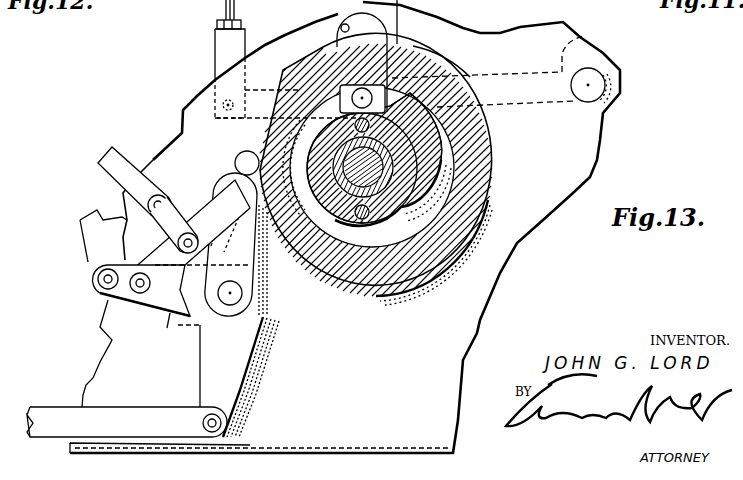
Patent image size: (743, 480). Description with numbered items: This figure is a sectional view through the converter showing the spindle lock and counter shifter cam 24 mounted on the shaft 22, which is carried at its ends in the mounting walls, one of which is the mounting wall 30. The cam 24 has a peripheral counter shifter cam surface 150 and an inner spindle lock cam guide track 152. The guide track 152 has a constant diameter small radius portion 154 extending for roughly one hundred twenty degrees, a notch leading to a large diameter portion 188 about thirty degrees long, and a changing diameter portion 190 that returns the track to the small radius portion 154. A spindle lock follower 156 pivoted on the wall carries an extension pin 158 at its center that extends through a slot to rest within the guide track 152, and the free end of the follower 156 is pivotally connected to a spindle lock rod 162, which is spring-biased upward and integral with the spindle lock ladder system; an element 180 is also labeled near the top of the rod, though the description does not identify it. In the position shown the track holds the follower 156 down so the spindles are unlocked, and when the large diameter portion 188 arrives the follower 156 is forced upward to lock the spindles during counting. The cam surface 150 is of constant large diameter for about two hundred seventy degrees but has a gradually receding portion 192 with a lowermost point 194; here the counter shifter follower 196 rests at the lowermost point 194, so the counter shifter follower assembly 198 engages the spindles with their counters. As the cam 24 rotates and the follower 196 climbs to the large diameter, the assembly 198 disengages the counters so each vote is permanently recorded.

The shaft 22 is at (340, 230).
The spindle lock and counter shifter cam 24 is at (398, 295).
The mounting wall 30 is at (583, 163).
The peripheral counter shifter cam surface 150 is at (448, 72).
The spindle lock cam guide track 152 is at (466, 152).
The constant diameter small radius portion 154 is at (308, 255).
The spindle lock follower 156 is at (581, 42).
The extension pin 158 is at (450, 72).
The spindle lock rod 162 is at (222, 10).
The pin 180 is at (345, 27).
The large diameter portion 188 is at (462, 113).
The changing diameter portion 190 is at (458, 182).
The gradually receding portion 192 is at (262, 118).
The lowermost point 194 is at (236, 160).
The counter shifter follower 196 is at (231, 180).
The counter shifter follower assembly 198 is at (127, 323).